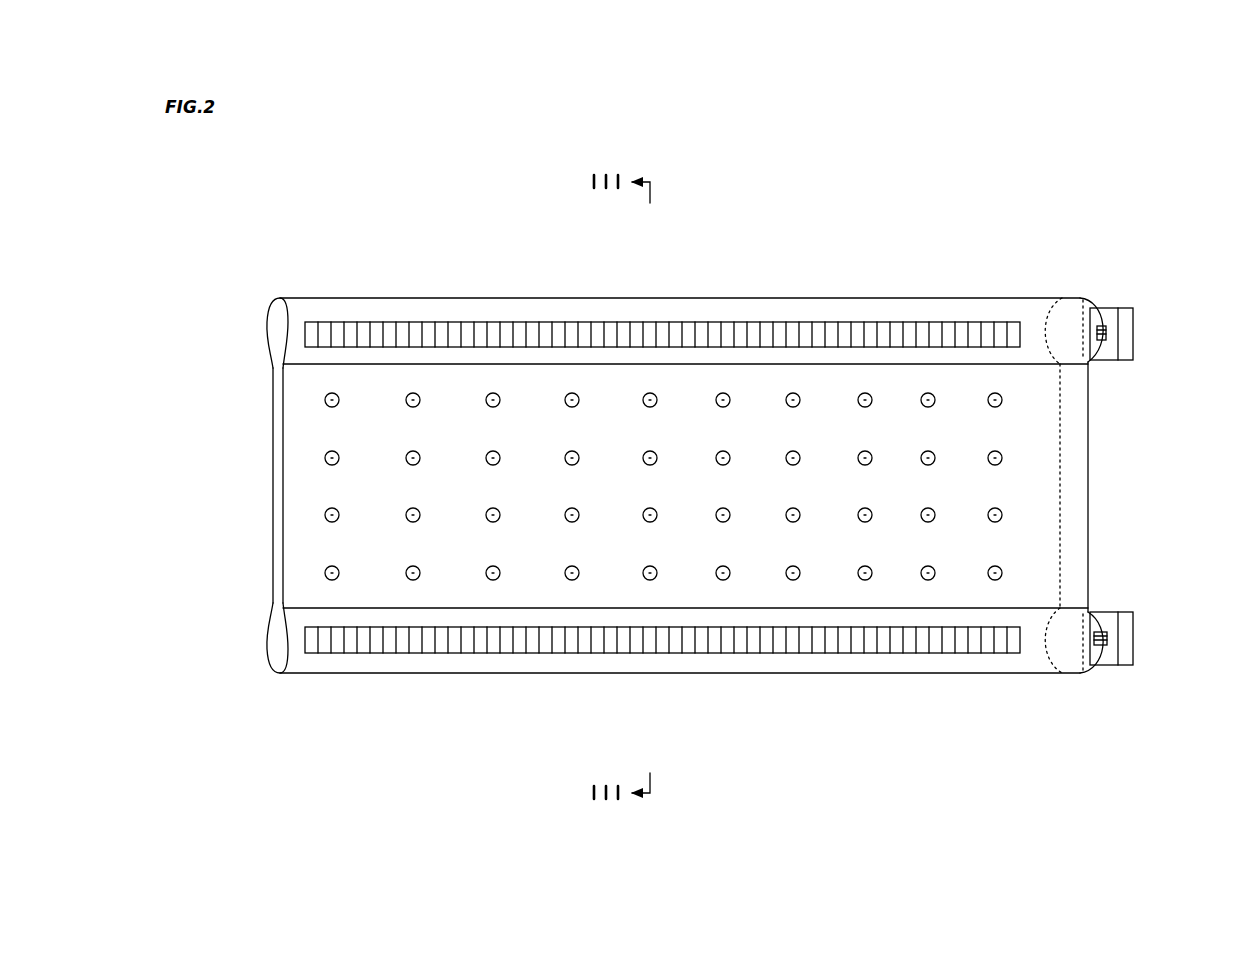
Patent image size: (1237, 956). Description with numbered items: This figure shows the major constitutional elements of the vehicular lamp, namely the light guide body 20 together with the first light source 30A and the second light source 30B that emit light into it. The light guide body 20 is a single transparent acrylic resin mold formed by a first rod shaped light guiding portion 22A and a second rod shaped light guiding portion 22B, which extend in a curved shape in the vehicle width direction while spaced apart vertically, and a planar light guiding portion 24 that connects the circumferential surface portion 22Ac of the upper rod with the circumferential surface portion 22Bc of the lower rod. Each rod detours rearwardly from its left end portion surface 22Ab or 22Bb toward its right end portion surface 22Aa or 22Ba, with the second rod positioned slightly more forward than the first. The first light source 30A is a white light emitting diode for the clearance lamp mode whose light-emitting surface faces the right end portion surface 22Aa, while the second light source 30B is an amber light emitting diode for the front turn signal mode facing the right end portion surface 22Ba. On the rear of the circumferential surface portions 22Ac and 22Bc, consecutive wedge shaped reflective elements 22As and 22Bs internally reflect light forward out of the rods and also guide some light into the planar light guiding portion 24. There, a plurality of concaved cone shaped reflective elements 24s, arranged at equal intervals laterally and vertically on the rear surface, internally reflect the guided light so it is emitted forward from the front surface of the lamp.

The light guide body 20 is at (566, 268).
The first rod shaped light guiding portion 22A is at (657, 282).
The right end portion surface 22Aa is at (1080, 305).
The left end portion surface 22Ab is at (272, 328).
The circumferential surface portion 22Ac is at (774, 305).
The reflective elements 22As is at (500, 328).
The second rod shaped light guiding portion 22B is at (658, 692).
The right end portion surface 22Ba is at (1083, 678).
The left end portion surface 22Bb is at (272, 645).
The circumferential surface portion 22Bc is at (776, 665).
The reflective elements 22Bs is at (500, 650).
The planar light guiding portion 24 is at (773, 546).
The reflective elements 24s is at (722, 580).
The first light source 30A is at (1108, 312).
The second light source 30B is at (1107, 652).